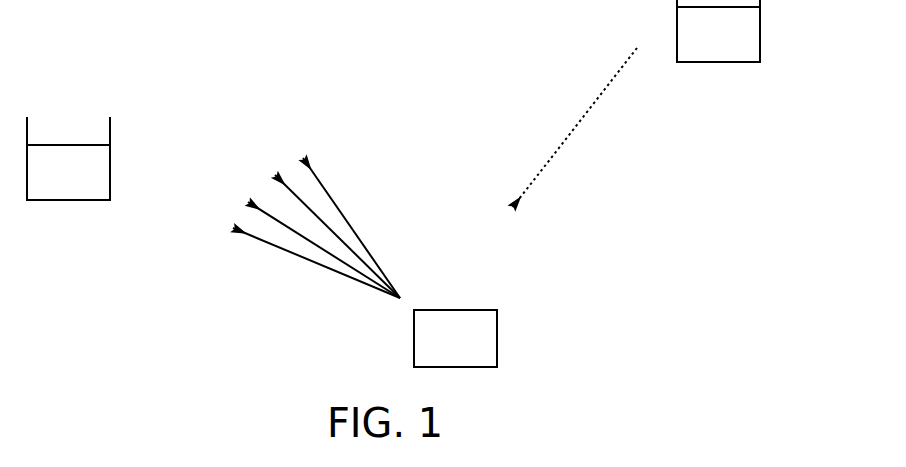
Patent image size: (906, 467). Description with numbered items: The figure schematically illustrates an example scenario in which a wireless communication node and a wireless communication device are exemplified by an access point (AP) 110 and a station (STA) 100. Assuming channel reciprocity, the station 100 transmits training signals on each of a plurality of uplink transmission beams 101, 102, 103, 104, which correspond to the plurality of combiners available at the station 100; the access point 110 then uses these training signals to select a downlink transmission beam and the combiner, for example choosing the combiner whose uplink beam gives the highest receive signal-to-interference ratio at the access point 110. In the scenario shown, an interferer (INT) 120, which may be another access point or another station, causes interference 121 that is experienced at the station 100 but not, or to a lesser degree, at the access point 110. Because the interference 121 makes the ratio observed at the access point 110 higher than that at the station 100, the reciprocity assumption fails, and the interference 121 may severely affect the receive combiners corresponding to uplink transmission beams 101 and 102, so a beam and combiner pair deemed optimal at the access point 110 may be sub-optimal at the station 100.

The station 100 is at (455, 338).
The uplink transmission beam 101 is at (303, 257).
The uplink transmission beam 102 is at (337, 258).
The uplink transmission beam 103 is at (320, 215).
The uplink transmission beam 104 is at (345, 216).
The access point 110 is at (68, 158).
The interferer 120 is at (718, 31).
The interference 121 is at (583, 116).